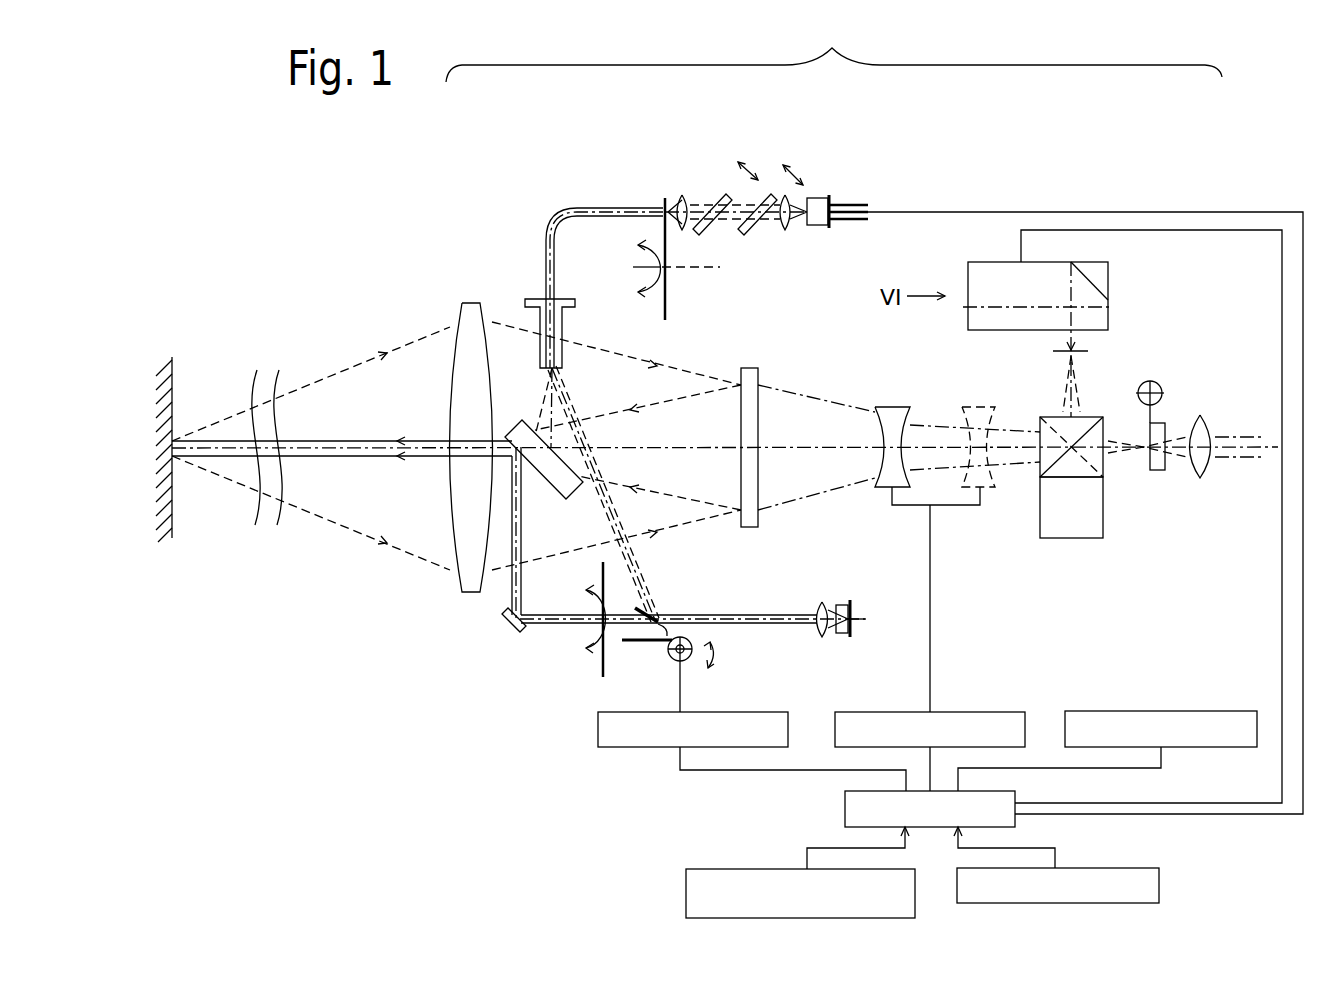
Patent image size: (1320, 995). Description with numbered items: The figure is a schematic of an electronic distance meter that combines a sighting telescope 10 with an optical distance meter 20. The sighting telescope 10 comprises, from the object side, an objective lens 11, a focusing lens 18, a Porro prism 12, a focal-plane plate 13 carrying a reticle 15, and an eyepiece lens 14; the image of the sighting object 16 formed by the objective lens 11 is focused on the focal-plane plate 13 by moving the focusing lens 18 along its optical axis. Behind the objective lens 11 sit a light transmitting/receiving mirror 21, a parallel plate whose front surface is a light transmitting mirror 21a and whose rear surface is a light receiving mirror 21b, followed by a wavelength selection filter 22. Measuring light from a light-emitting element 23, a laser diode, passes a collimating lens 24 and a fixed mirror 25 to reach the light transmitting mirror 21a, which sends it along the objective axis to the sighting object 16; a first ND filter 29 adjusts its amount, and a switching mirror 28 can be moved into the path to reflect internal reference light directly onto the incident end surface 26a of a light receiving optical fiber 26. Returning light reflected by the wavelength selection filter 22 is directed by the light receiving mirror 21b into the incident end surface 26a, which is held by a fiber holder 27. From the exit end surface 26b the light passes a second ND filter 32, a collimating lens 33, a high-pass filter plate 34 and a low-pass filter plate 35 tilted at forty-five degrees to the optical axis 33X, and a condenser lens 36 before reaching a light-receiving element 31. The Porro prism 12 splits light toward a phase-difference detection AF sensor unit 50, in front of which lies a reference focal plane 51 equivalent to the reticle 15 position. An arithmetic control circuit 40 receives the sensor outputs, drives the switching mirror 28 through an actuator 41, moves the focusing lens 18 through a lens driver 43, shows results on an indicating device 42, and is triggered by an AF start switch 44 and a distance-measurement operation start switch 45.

The sighting telescope 10 is at (834, 51).
The objective lens 11 is at (476, 303).
The Porro prism 12 is at (1104, 417).
The focal-plane plate 13 is at (1152, 382).
The eyepiece lens 14 is at (1200, 415).
The reticle 15 is at (1142, 380).
The sighting object 16 is at (172, 373).
The focusing lens 18 is at (888, 407).
The optical distance meter 20 is at (506, 212).
The light transmitting/receiving mirror 21 is at (568, 497).
The light transmitting mirror 21a is at (533, 470).
The light receiving mirror 21b is at (527, 422).
The wavelength selection filter 22 is at (752, 527).
The light-emitting element 23 is at (842, 605).
The collimating lens 24 is at (820, 637).
The fixed mirror 25 is at (508, 632).
The light receiving optical fiber 26 is at (578, 208).
The incident end surface 26a is at (562, 367).
The exit end surface 26b is at (663, 208).
The fiber holder 27 is at (562, 323).
The switching mirror 28 is at (658, 610).
The first ND filter 29 is at (603, 665).
The light-receiving element 31 is at (822, 198).
The second ND filter 32 is at (667, 308).
The collimating lens 33 is at (683, 196).
The optical axis 33X is at (703, 265).
The high-pass filter plate 34 is at (728, 196).
The low-pass filter plate 35 is at (772, 196).
The condenser lens 36 is at (787, 232).
The arithmetic control circuit 40 is at (930, 798).
The actuator 41 is at (752, 737).
The indicating device 42 is at (1107, 738).
The lens driver 43 is at (930, 737).
The AF start switch 44 is at (1056, 865).
The distance-measurement operation start switch 45 is at (800, 872).
The phase-difference detection AF sensor unit 50 is at (985, 266).
The reference focal plane 51 is at (1073, 353).